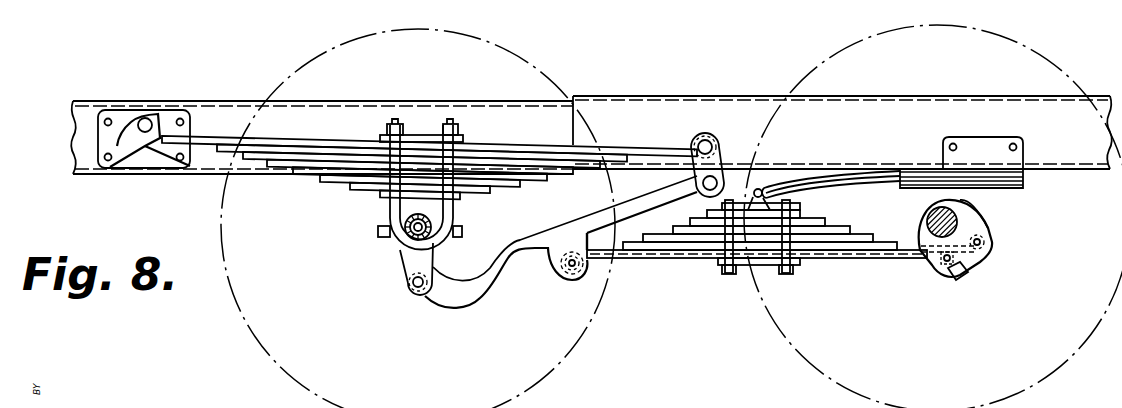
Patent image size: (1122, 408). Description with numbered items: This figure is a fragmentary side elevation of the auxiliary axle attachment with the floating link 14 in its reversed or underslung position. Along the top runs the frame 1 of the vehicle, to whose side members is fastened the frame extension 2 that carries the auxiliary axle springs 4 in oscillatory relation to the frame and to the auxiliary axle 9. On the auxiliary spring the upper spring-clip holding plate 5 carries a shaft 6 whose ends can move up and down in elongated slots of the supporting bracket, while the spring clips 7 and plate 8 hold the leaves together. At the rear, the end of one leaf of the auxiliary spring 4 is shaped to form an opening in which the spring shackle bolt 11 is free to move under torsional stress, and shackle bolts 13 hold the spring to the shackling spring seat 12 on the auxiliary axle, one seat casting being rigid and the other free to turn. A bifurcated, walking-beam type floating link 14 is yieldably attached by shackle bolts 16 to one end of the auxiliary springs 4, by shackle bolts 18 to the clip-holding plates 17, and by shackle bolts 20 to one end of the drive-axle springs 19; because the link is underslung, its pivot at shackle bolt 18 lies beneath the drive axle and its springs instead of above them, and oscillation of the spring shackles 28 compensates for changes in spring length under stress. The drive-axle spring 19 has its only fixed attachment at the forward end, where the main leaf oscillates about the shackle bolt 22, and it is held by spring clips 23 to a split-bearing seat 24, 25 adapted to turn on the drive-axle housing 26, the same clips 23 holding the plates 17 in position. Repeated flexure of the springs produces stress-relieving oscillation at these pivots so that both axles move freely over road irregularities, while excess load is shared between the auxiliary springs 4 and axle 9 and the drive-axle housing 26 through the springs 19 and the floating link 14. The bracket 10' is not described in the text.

The frame 1 is at (220, 113).
The frame extension 2 is at (658, 108).
The auxiliary axle springs 4 is at (853, 247).
The upper spring-clip holding plate 5 is at (717, 209).
The shaft 6 is at (787, 195).
The spring clips 7 is at (723, 240).
The plate 8 is at (767, 261).
The auxiliary axle 9 is at (956, 215).
The frame bracket 10' is at (949, 173).
The spring shackle bolt 11 is at (940, 262).
The shackling spring seat 12 is at (965, 227).
The shackle bolts 13 is at (985, 247).
The floating link 14 is at (530, 218).
The shackle bolts 16 is at (563, 272).
The upper spring-clip holding plates 17 is at (417, 134).
The shackle bolts 18 is at (418, 292).
The drive-axle springs 19 is at (333, 181).
The shackle bolts 20 is at (709, 141).
The shackle bolt 22 is at (146, 123).
The spring clips 23 is at (383, 217).
The split-bearing seat 24 is at (408, 202).
The split-bearing seat 25 is at (412, 246).
The drive-axle housing 26 is at (408, 231).
The spring shackles 28 is at (742, 246).